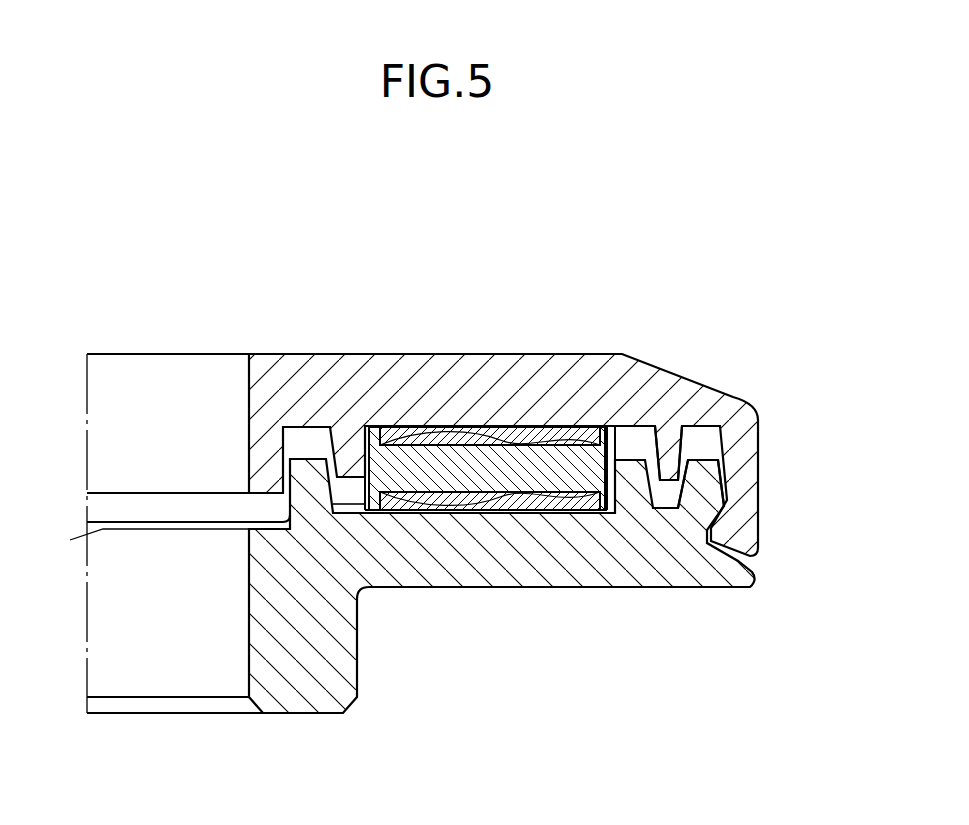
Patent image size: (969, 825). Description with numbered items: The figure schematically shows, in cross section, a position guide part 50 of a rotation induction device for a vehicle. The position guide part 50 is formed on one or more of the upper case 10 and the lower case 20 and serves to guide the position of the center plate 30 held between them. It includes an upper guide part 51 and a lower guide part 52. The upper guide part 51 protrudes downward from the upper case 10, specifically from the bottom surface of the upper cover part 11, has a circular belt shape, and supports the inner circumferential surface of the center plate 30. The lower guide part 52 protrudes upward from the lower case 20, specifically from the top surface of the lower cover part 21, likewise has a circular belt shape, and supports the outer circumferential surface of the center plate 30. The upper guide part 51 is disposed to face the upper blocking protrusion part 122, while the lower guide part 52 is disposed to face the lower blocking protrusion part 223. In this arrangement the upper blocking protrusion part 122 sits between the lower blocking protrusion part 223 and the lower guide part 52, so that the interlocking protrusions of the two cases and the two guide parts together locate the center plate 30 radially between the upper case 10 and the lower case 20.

The upper case 10 is at (509, 352).
The upper cover part 11 is at (410, 353).
The lower case 20 is at (696, 592).
The lower cover part 21 is at (400, 588).
The center plate 30 is at (622, 437).
The position guide part 50 is at (462, 651).
The upper guide part 51 is at (350, 462).
The lower guide part 52 is at (635, 473).
The upper blocking protrusion part 122 is at (667, 448).
The lower blocking protrusion part 223 is at (703, 473).